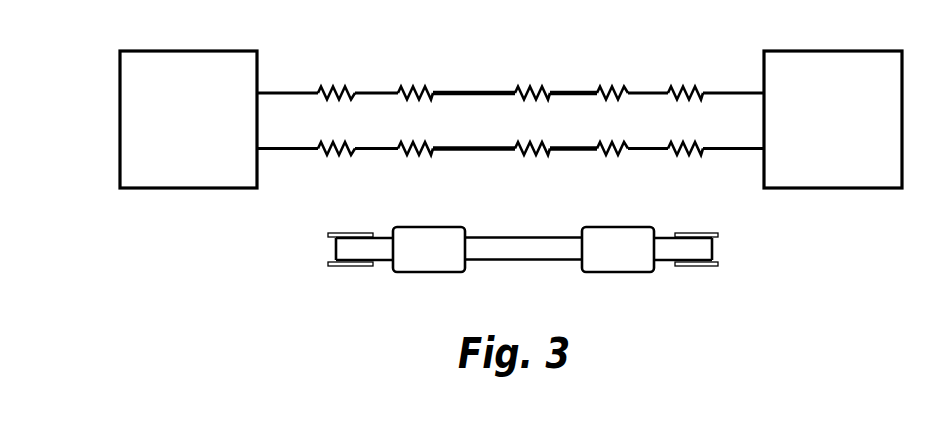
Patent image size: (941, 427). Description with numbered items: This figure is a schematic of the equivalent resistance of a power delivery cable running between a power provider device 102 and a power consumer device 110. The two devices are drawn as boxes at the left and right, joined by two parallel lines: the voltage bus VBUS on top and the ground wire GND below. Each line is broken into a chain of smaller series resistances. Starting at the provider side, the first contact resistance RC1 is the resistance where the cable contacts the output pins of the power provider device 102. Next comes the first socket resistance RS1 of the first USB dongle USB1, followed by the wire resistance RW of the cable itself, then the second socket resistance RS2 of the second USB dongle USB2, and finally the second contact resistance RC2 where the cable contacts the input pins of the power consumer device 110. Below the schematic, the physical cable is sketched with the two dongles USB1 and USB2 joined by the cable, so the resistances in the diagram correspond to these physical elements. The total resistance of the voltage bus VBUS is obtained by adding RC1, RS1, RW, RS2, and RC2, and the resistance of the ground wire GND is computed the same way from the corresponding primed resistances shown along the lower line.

The power provider device 102 is at (120, 52).
The power consumer device 110 is at (808, 50).
The voltage bus VBUS is at (510, 80).
The ground wire GND is at (510, 135).
The first contact resistance RC1 is at (337, 119).
The first socket resistance RS1 is at (412, 119).
The wire resistance RW is at (532, 119).
The second socket resistance RS2 is at (609, 119).
The second contact resistance RC2 is at (689, 119).
The first USB dongle USB1 is at (396, 249).
The second USB dongle USB2 is at (650, 249).